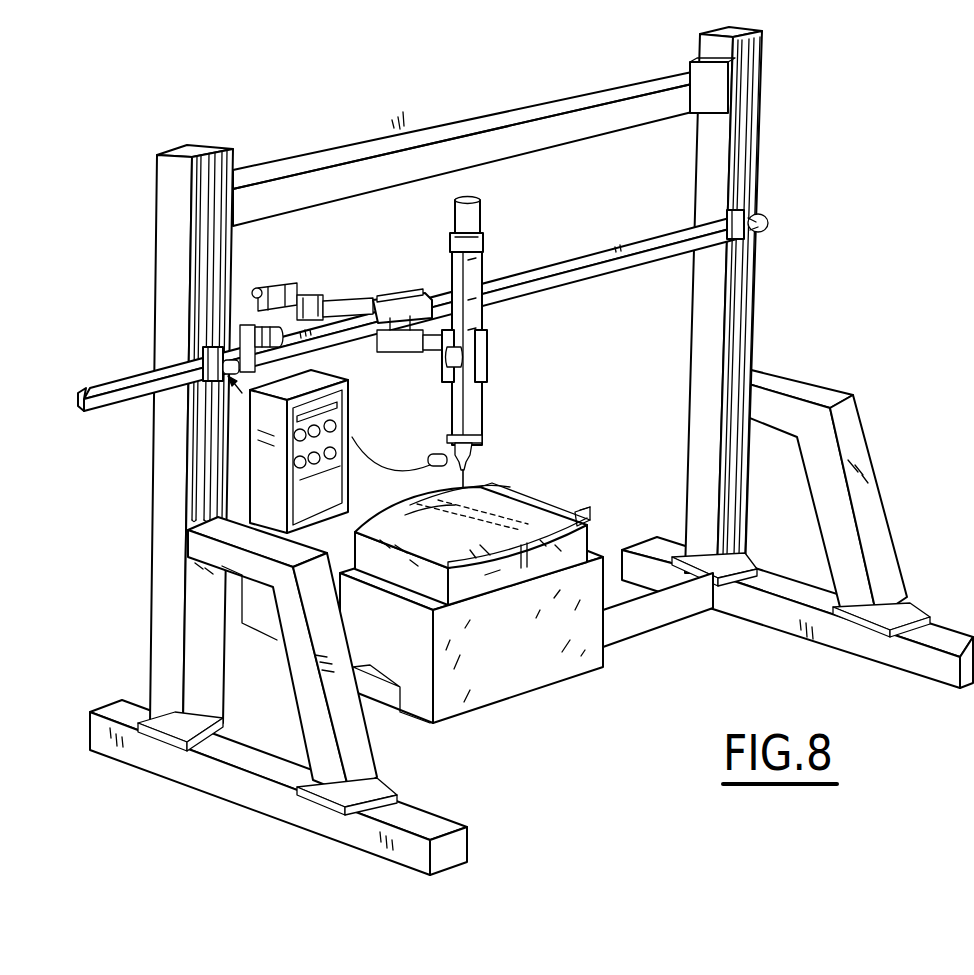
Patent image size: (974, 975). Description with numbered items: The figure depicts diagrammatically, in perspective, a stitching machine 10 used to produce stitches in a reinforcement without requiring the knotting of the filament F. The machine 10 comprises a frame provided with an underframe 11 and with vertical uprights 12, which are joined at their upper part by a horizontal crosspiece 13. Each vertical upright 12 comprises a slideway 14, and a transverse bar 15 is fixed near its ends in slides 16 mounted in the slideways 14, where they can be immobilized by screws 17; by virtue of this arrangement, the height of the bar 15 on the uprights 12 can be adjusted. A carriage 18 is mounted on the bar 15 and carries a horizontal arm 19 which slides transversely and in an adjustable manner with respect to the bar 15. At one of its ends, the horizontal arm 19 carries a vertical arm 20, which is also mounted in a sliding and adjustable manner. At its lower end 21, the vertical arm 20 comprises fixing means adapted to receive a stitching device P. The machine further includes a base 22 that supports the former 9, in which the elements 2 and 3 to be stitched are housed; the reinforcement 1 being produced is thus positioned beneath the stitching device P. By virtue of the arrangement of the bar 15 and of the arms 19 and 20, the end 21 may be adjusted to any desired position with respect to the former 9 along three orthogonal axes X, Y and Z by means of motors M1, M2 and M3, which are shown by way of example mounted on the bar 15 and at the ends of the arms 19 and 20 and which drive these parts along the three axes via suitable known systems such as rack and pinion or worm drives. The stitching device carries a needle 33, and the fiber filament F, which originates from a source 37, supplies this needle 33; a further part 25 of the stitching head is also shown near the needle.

The workpiece rim/edge 1 is at (580, 507).
The element 2 is at (523, 573).
The element 3 is at (412, 518).
The former 9 is at (492, 578).
The stitching machine 10 is at (152, 148).
The underframe 11 is at (882, 550).
The vertical upright 12 is at (167, 203).
The horizontal crosspiece 13 is at (397, 147).
The slideway 14 is at (213, 267).
The transverse bar 15 is at (587, 270).
The slide 16 is at (203, 350).
The screw 17 is at (764, 236).
The carriage 18 is at (405, 300).
The horizontal arm 19 is at (313, 293).
The vertical arm 20 is at (473, 270).
The lower end 21 is at (473, 423).
The base 22 is at (527, 673).
The probe head 25 is at (430, 460).
The needle 33 is at (508, 487).
The source 37 is at (260, 452).
The motor M1 is at (300, 333).
The motor M2 is at (263, 287).
The motor M3 is at (473, 218).
The filament F is at (388, 470).
The stitching device P is at (496, 460).
The axis X is at (600, 233).
The axis Y is at (373, 288).
The axis Z is at (500, 330).